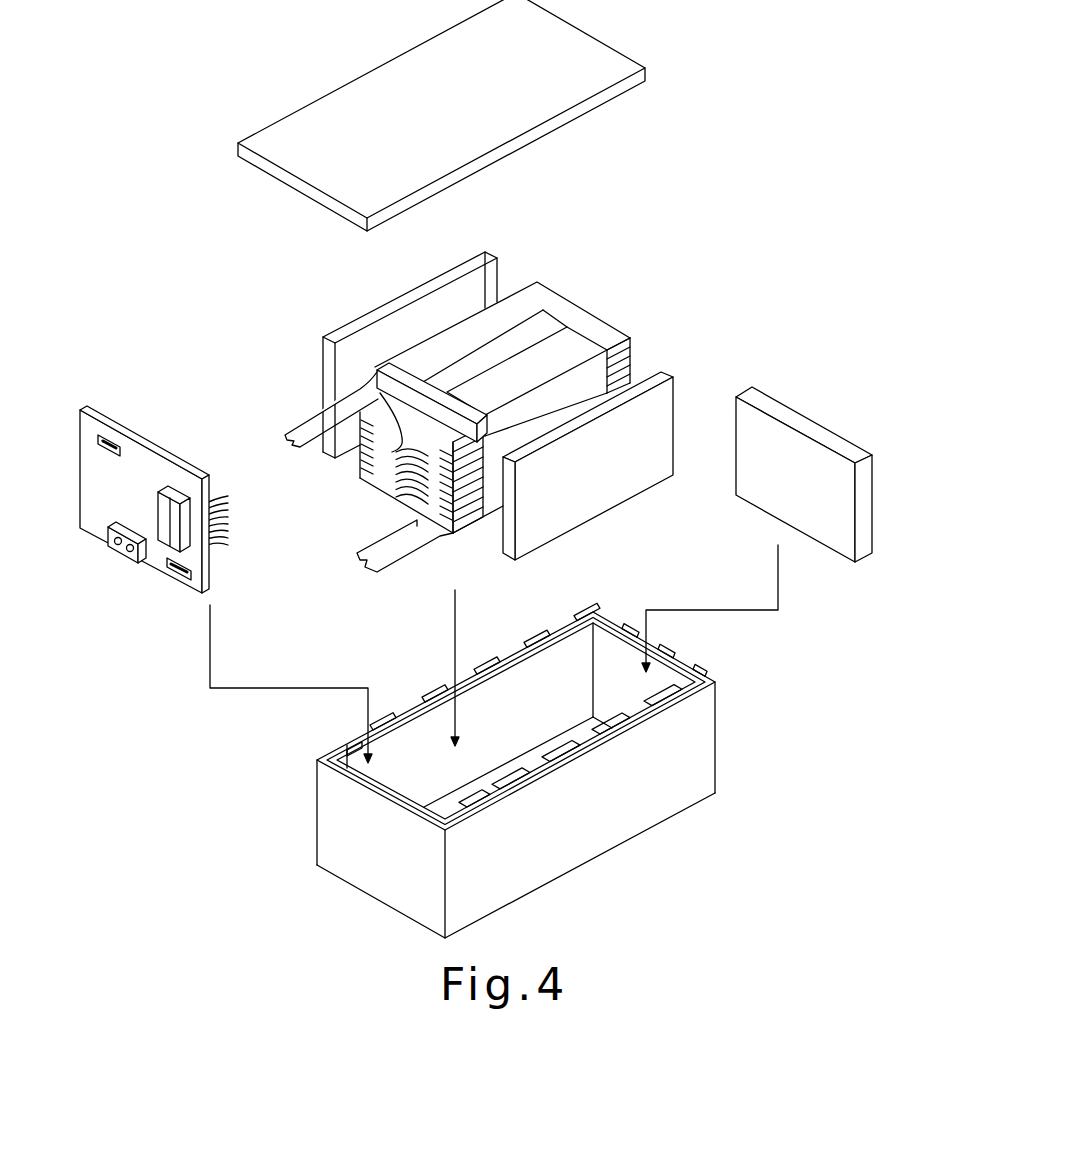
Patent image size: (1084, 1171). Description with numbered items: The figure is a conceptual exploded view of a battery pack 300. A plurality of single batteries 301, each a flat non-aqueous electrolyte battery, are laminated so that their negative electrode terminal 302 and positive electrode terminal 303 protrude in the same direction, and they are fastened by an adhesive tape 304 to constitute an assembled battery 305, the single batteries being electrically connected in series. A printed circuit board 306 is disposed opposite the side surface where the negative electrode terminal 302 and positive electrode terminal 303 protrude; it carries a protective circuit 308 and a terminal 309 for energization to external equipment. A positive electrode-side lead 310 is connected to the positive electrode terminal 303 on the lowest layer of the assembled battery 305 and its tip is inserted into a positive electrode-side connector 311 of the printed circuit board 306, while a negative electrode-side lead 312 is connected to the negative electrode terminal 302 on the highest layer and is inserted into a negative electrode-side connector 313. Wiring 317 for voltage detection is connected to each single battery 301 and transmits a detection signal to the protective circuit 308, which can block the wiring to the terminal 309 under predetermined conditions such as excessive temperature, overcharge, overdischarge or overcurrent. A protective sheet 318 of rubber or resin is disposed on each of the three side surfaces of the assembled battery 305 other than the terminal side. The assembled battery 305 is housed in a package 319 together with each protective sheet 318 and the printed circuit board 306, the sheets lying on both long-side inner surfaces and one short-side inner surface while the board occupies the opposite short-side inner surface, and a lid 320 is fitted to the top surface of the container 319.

The battery pack 300 is at (158, 114).
The single battery 301 is at (630, 376).
The negative electrode terminal 302 is at (358, 386).
The positive electrode terminal 303 is at (433, 424).
The adhesive tape 304 is at (558, 352).
The assembled battery 305 is at (447, 328).
The printed circuit board 306 is at (106, 402).
The protective circuit 308 is at (172, 490).
The terminal for energization to external equipment 309 is at (127, 563).
The positive electrode-side lead 310 is at (388, 548).
The positive electrode-side connector 311 is at (208, 572).
The negative electrode-side lead 312 is at (293, 426).
The negative electrode-side connector 313 is at (113, 440).
The wiring for voltage detection 317 is at (388, 478).
The protective sheet 318 is at (381, 316).
The package 319 is at (707, 745).
The lid 320 is at (595, 57).